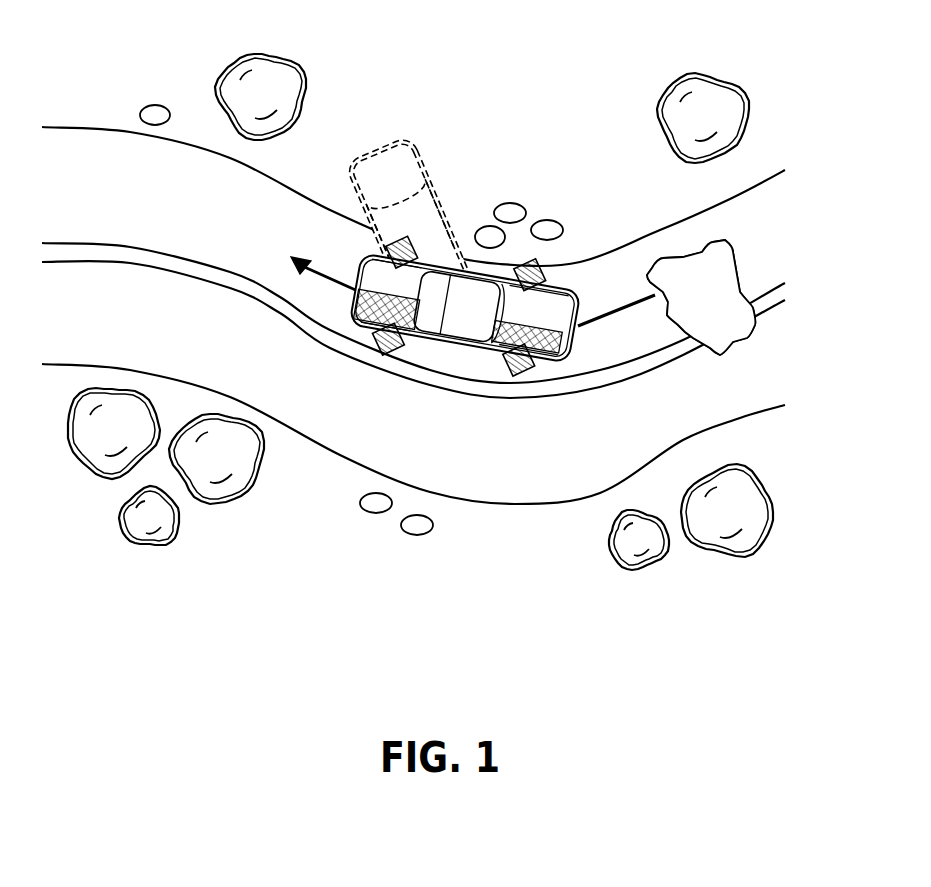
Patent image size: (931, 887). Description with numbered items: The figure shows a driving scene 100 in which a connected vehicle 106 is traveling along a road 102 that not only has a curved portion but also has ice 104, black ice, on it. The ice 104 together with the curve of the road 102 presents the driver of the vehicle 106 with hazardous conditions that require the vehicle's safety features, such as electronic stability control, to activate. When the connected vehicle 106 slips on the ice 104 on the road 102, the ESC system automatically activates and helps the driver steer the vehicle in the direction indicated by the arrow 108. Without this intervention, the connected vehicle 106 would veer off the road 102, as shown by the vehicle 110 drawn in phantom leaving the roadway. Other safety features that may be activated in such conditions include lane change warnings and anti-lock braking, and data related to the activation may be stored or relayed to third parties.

The driving scene 100 is at (786, 665).
The road 102 is at (767, 253).
The ice 104 is at (757, 330).
The connected vehicle 106 is at (590, 263).
The arrow 108 is at (298, 258).
The vehicle 110 is at (370, 140).